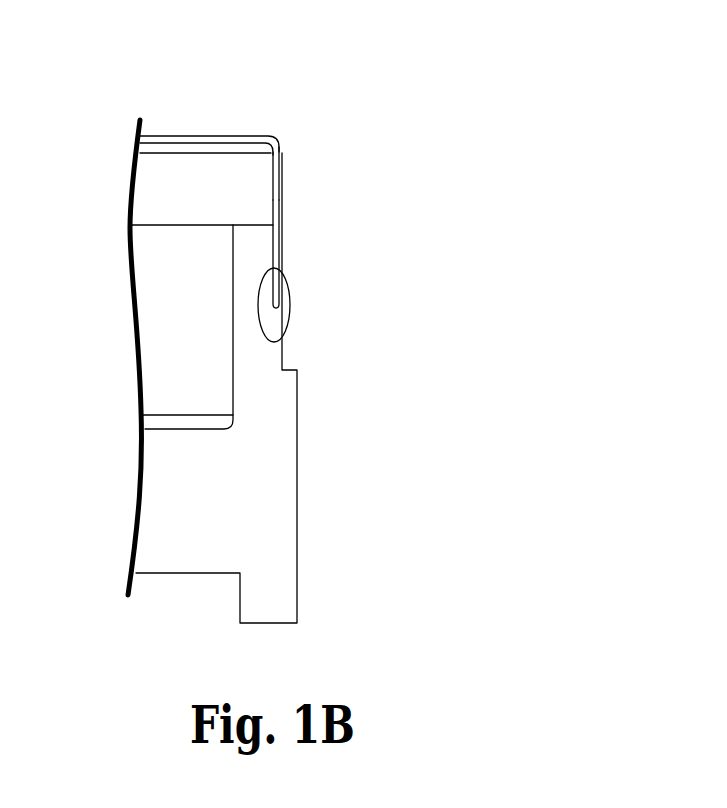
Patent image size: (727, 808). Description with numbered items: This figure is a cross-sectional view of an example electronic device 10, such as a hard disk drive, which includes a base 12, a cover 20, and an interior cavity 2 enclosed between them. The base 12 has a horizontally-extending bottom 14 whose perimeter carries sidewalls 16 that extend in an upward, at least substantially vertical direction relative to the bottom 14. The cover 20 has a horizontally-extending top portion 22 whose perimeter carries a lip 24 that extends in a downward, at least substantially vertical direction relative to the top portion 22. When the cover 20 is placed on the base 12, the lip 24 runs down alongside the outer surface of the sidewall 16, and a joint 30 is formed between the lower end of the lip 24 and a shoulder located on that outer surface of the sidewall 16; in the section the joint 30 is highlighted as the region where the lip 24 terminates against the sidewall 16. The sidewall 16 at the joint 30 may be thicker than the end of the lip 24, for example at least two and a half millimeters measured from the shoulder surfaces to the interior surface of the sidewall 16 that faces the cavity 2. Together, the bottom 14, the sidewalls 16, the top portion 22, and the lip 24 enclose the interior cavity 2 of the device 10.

The interior 2 is at (173, 317).
The electronic device 10 is at (505, 117).
The base 12 is at (252, 458).
The horizontally-extending bottom 14 is at (173, 529).
The sidewalls 16 is at (162, 175).
The cover 20 is at (200, 133).
The horizontally-extending top portion 22 is at (151, 134).
The lip 24 is at (276, 181).
The joint 30 is at (292, 305).